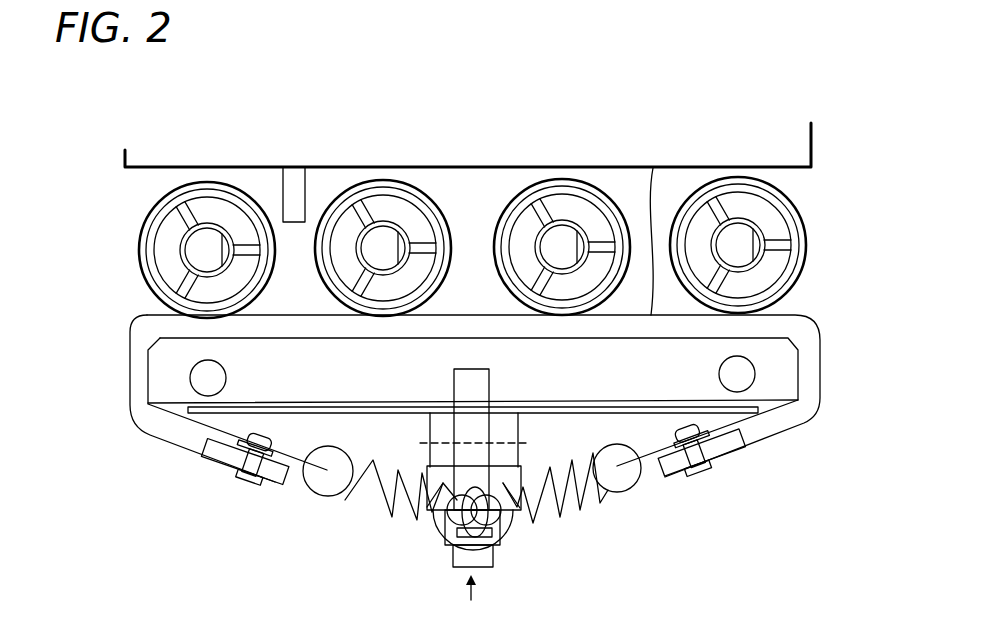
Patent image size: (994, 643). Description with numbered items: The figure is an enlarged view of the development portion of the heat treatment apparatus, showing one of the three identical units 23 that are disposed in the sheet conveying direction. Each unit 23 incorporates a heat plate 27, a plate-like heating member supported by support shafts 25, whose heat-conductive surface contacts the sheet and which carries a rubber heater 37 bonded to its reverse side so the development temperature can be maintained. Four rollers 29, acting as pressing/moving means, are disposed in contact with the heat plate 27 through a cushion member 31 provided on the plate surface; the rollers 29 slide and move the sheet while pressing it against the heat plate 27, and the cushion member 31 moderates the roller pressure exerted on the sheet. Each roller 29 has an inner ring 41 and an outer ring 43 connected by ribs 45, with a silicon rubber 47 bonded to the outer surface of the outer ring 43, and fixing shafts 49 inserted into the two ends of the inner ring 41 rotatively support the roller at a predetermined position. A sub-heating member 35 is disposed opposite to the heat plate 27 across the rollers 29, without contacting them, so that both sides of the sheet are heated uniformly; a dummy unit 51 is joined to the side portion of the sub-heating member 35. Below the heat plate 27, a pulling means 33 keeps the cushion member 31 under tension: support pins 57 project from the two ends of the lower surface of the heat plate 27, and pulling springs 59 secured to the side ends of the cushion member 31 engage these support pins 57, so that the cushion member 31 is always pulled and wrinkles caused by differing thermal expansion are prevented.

The unit 23 is at (734, 129).
The support shaft 25 is at (190, 378).
The heat plate 27 is at (804, 392).
The roller 29 is at (486, 199).
The cushion member 31 is at (653, 168).
The pulling means 33 is at (591, 530).
The sub-heating member 35 is at (812, 136).
The rubber heater 37 is at (327, 414).
The inner ring 41 is at (345, 266).
The outer ring 43 is at (405, 248).
The rib 45 is at (358, 198).
The silicon rubber 47 is at (419, 208).
The fixing shaft 49 is at (407, 191).
The dummy unit 51 is at (276, 192).
The support pin 57 is at (495, 559).
The pulling spring 59 is at (372, 500).